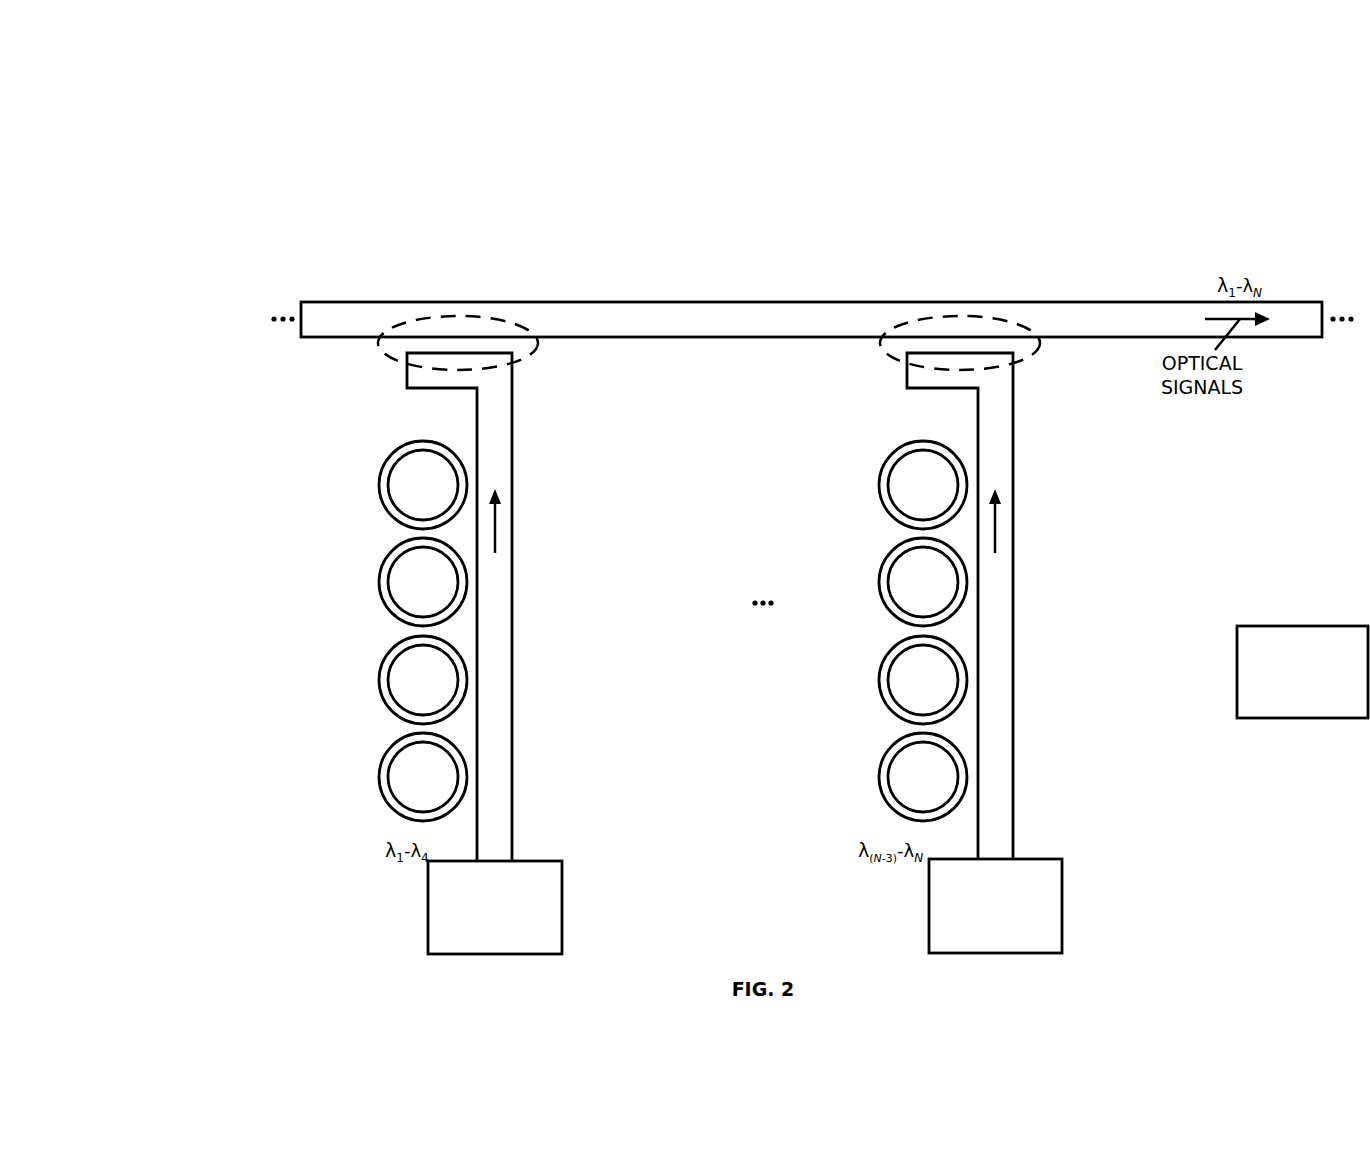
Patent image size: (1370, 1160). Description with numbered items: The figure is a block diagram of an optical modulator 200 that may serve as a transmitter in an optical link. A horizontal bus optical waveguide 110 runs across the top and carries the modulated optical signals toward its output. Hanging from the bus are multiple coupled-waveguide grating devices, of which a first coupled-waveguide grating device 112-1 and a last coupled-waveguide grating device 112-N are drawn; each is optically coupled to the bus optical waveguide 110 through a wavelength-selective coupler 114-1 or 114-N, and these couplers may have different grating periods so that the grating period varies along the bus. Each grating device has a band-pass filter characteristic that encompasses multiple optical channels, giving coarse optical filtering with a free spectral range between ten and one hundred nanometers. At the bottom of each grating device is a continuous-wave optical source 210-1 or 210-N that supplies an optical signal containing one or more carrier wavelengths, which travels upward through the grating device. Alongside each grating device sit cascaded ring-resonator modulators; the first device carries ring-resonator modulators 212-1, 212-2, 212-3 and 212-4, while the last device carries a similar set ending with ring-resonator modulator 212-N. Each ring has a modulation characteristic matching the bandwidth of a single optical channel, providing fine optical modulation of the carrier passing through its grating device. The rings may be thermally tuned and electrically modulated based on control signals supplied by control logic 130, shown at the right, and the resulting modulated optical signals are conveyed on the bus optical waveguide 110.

The optical modulator 200 is at (308, 184).
The bus optical waveguide 110 is at (537, 317).
The wavelength-selective coupler 114-1 is at (463, 318).
The wavelength-selective coupler 114-N is at (923, 323).
The coupled-waveguide grating device 112-1 is at (498, 825).
The coupled-waveguide grating device 112-N is at (998, 830).
The ring-resonator modulator 212-1 is at (464, 485).
The ring-resonator modulator 212-2 is at (464, 583).
The ring-resonator modulator 212-3 is at (464, 681).
The ring-resonator modulator 212-4 is at (464, 778).
The ring-resonator modulator 212-N is at (964, 778).
The optical source 210-1 is at (495, 907).
The optical source 210-N is at (995, 906).
The control logic 130 is at (1302, 672).